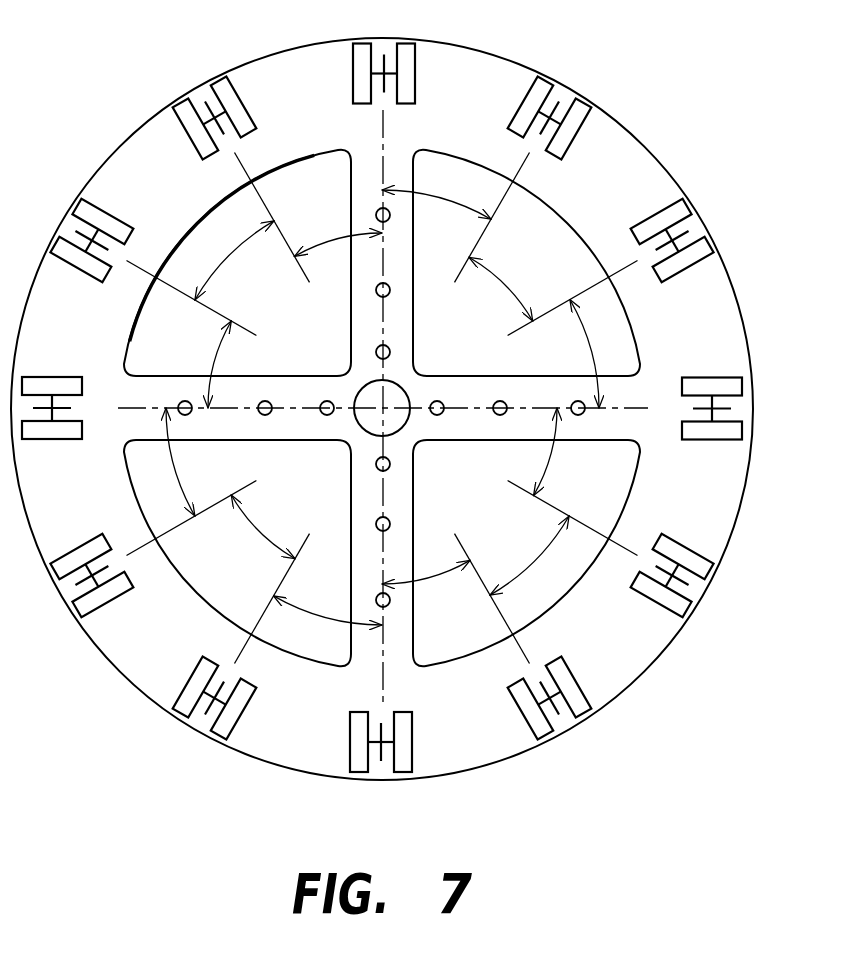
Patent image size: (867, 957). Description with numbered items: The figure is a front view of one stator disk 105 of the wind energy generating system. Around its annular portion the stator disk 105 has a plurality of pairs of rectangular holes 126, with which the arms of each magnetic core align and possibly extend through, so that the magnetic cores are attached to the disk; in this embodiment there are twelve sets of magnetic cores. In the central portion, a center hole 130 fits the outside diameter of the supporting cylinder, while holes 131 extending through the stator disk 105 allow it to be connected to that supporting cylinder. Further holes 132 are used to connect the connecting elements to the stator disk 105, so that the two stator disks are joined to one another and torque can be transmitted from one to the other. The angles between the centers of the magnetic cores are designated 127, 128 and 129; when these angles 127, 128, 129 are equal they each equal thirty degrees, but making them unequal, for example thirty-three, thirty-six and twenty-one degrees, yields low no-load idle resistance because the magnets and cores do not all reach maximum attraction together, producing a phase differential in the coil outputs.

The stator disk 105 is at (586, 90).
The pairs of rectangular holes 126 is at (700, 222).
The angle 127 is at (432, 199).
The angle 128 is at (210, 206).
The angle 129 is at (328, 240).
The center hole 130 is at (397, 385).
The holes 131 is at (326, 414).
The holes 132 is at (378, 348).